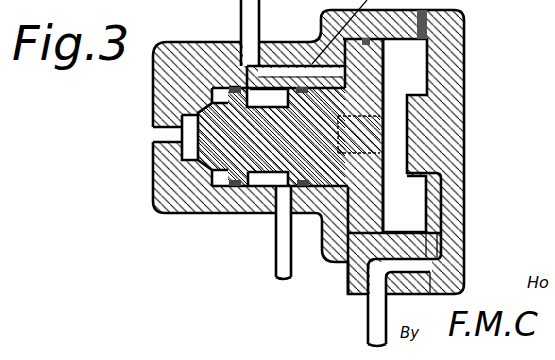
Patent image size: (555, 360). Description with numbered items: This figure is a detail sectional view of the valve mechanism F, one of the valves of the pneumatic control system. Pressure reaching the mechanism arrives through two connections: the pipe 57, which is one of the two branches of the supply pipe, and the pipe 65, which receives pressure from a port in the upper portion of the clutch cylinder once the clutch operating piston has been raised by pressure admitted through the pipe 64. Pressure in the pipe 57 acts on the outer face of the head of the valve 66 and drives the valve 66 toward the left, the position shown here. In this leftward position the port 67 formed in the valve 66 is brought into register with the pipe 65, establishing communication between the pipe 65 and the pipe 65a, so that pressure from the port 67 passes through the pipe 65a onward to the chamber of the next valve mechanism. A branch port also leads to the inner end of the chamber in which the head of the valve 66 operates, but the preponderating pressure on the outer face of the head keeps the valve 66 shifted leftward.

The valve mechanism F is at (467, 95).
The pipe 64 is at (243, 44).
The pipe 65a is at (261, 12).
The valve 66 is at (368, 200).
The port 67 is at (266, 179).
The pipe 65 is at (280, 250).
The pipe 57 is at (373, 315).